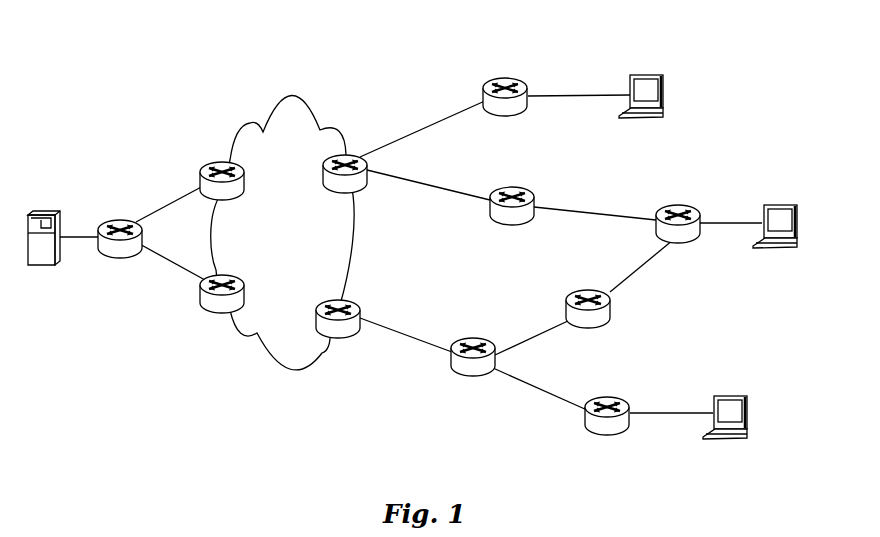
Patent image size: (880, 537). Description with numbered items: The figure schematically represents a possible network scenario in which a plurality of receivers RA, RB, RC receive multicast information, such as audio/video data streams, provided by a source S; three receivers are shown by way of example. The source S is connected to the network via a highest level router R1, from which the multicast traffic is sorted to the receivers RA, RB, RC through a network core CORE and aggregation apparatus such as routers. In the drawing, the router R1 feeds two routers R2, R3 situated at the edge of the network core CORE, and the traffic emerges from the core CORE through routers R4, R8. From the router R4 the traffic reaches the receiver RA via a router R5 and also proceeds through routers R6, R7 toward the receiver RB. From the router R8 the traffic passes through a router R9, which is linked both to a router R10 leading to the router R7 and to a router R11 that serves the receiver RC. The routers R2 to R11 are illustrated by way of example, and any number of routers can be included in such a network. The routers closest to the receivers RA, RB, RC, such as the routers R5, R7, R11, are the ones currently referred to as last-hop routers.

The source S is at (47, 220).
The highest level router R1 is at (124, 259).
The router R2 is at (226, 201).
The router R3 is at (226, 314).
The router R4 is at (349, 194).
The router R5 is at (509, 117).
The router R6 is at (516, 226).
The router R7 is at (682, 244).
The router R8 is at (342, 339).
The router R9 is at (477, 377).
The router R10 is at (592, 329).
The router R11 is at (611, 436).
The receiver RA is at (652, 80).
The receiver RB is at (773, 247).
The receiver RC is at (733, 435).
The network core CORE is at (282, 232).